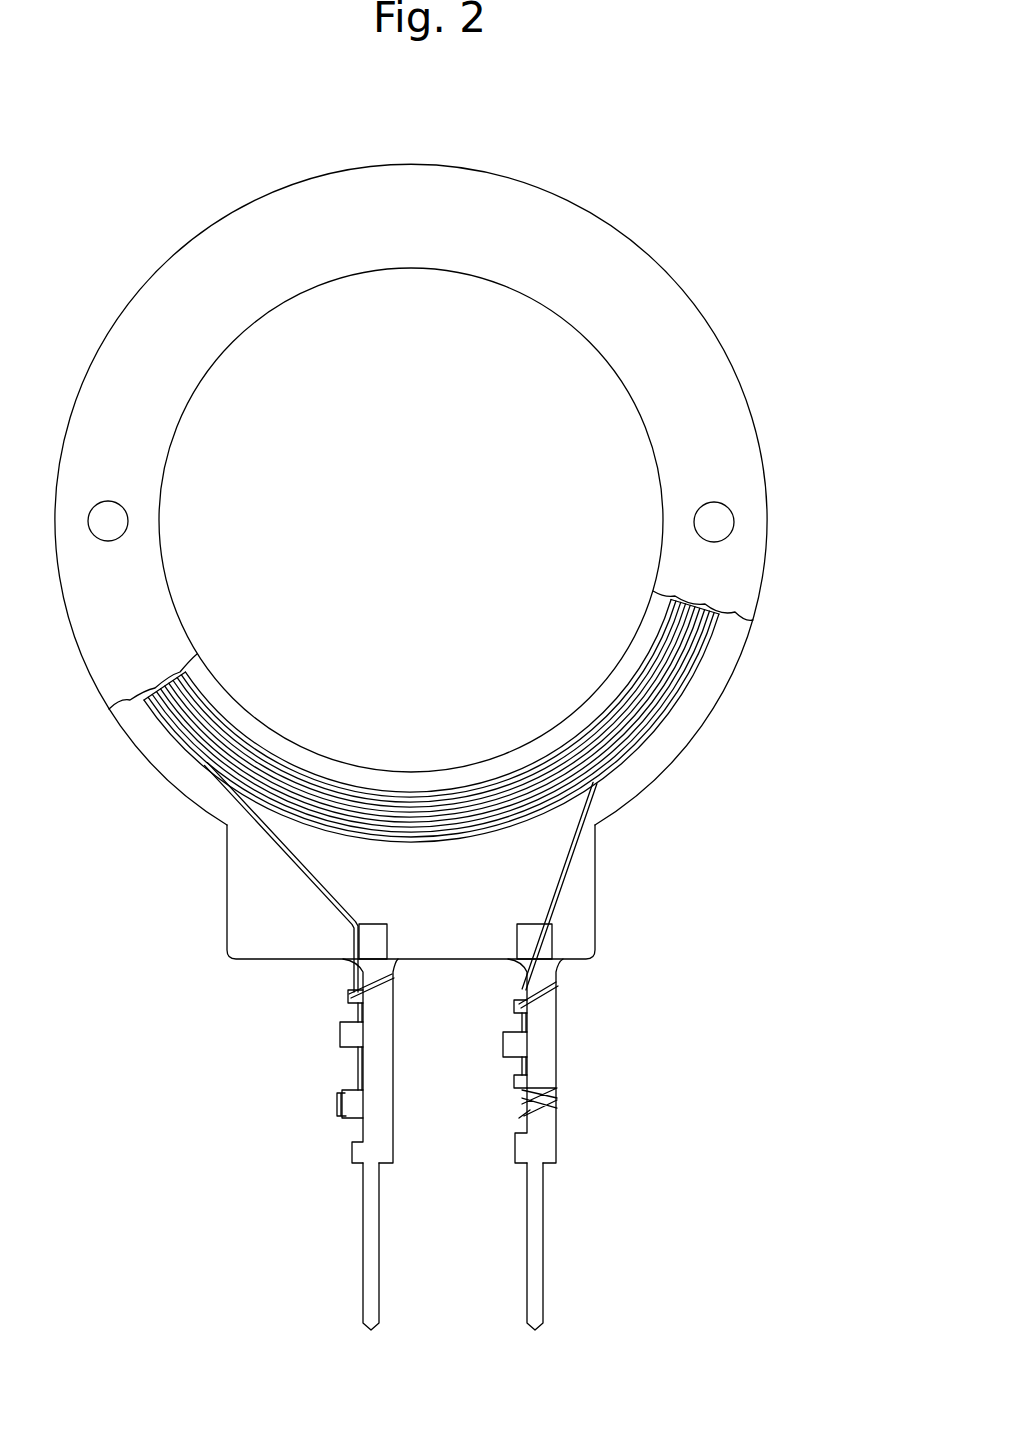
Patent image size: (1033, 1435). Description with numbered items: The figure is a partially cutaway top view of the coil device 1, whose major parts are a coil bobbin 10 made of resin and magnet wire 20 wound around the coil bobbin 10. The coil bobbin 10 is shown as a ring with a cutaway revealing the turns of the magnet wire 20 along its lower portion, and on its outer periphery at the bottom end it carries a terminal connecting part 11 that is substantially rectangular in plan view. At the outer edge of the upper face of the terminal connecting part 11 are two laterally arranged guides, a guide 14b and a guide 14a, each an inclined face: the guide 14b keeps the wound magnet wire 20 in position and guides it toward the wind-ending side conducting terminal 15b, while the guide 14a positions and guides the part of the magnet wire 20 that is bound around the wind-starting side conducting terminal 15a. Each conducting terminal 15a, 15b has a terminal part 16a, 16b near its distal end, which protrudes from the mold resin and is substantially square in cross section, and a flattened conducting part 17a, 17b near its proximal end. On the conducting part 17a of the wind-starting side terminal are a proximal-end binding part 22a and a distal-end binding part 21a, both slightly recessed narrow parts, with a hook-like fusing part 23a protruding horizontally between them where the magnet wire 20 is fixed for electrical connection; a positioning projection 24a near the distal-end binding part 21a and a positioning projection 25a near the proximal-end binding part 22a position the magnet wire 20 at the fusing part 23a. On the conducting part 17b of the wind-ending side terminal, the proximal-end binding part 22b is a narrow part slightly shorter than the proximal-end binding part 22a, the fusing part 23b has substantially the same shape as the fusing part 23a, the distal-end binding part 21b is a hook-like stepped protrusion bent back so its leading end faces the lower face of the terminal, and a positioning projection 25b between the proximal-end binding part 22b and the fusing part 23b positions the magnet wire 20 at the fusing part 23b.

The coil device 1 is at (122, 173).
The coil bobbin 10 is at (663, 263).
The terminal connecting part 11 is at (227, 888).
The guide 14a is at (543, 940).
The guide 14b is at (372, 938).
The wind-starting side conducting terminal 15a is at (545, 1268).
The wind-ending side conducting terminal 15b is at (362, 1268).
The terminal part 16a is at (617, 1246).
The terminal part 16b is at (289, 1246).
The conducting part 17a is at (538, 1061).
The conducting part 17b is at (364, 1074).
The magnet wire 20 is at (560, 877).
The distal-end binding part 21a is at (555, 1117).
The distal-end binding part 21b is at (340, 1108).
The proximal-end binding part 22a is at (557, 993).
The proximal-end binding part 22b is at (392, 983).
The fusing part 23a is at (503, 1045).
The fusing part 23b is at (340, 1035).
The positioning projection 24a is at (512, 1082).
The positioning projection 25a is at (515, 1003).
The positioning projection 25b is at (350, 997).